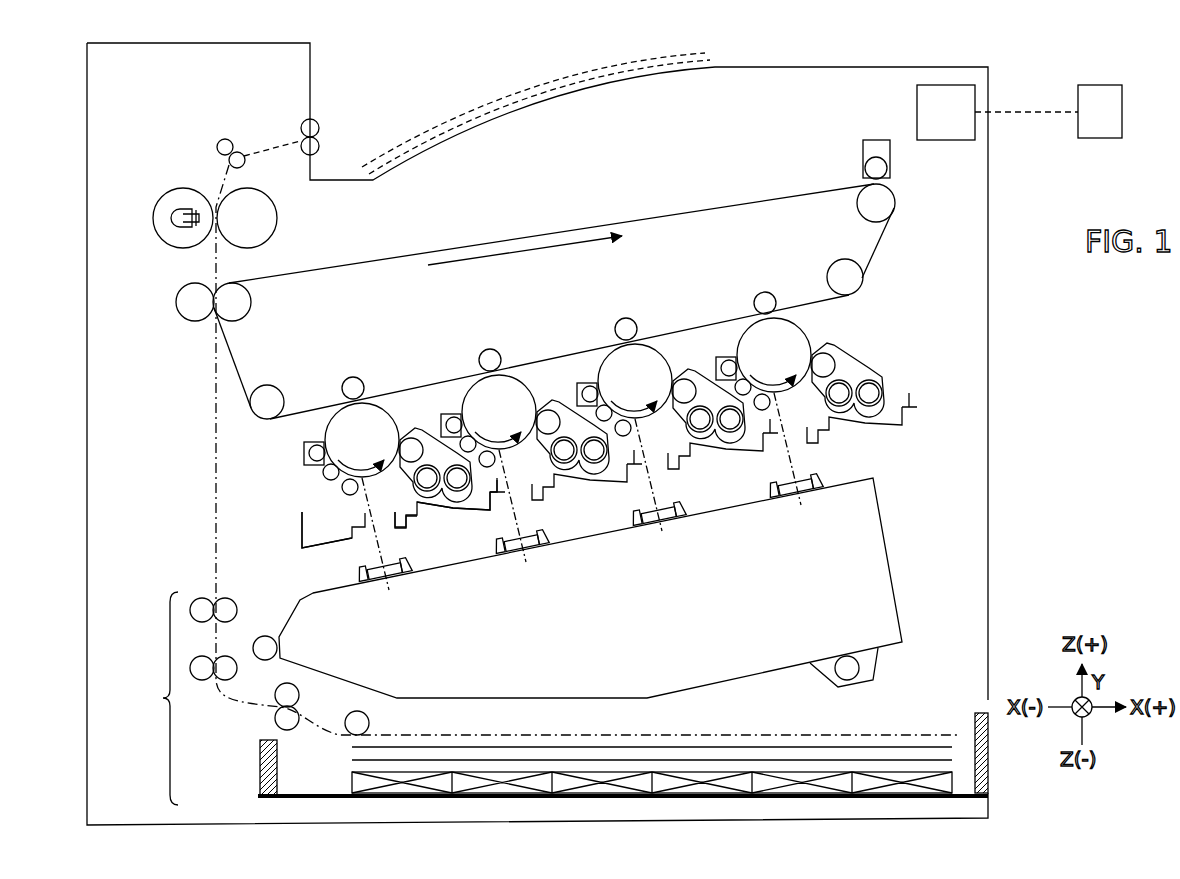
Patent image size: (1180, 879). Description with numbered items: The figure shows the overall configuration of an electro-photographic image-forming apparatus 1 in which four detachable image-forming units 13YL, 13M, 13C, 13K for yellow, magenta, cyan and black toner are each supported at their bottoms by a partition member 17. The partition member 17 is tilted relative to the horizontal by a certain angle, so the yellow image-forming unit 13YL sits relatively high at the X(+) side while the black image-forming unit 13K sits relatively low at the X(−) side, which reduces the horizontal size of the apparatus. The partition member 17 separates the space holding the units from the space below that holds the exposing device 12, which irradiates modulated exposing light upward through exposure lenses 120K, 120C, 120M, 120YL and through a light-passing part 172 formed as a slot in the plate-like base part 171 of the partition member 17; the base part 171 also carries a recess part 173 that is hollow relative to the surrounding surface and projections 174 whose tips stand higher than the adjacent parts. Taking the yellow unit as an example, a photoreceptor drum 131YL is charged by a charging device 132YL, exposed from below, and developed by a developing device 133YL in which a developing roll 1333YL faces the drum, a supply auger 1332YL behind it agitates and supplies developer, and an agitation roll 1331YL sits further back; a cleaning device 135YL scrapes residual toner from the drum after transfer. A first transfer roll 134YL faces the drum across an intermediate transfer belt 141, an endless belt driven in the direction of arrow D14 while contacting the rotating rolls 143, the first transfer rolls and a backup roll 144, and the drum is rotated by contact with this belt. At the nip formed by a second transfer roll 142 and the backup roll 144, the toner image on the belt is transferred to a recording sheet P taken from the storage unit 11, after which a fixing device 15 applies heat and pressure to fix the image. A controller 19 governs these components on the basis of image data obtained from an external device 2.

The image-forming apparatus 1 is at (989, 484).
The external device 2 is at (1078, 100).
The storage unit 11 is at (253, 698).
The exposing device 12 is at (883, 530).
The image-forming unit (black) 13K is at (363, 372).
The image-forming unit (cyan) 13C is at (506, 344).
The image-forming unit (magenta) 13M is at (633, 313).
The image-forming unit (yellow) 13YL is at (823, 355).
The fixing device 15 is at (160, 184).
The partition member 17 is at (912, 421).
The controller 19 is at (917, 111).
The exposure lens 120K is at (392, 582).
The exposure lens 120C is at (528, 555).
The exposure lens 120M is at (665, 528).
The exposure lens 120YL is at (802, 502).
The photoreceptor drum 131YL is at (774, 355).
The charging device 132YL is at (758, 412).
The developing device 133YL is at (889, 354).
The agitation roll 1331YL is at (872, 384).
The supply auger 1332YL is at (841, 380).
The developing roll 1333YL is at (826, 353).
The first transfer roll 134YL is at (773, 268).
The cleaning device 135YL is at (721, 356).
The intermediate transfer belt 141 is at (570, 232).
The second transfer roll 142 is at (195, 321).
The rotating roll 143 is at (268, 386).
The backup roll 144 is at (252, 303).
The base part 171 is at (454, 508).
The light-passing part 172 is at (367, 540).
The recess part 173 is at (410, 519).
The projection 174 is at (352, 512).
The rotation direction of intermediate transfer belt D14 is at (525, 263).
The recording sheet P is at (879, 746).